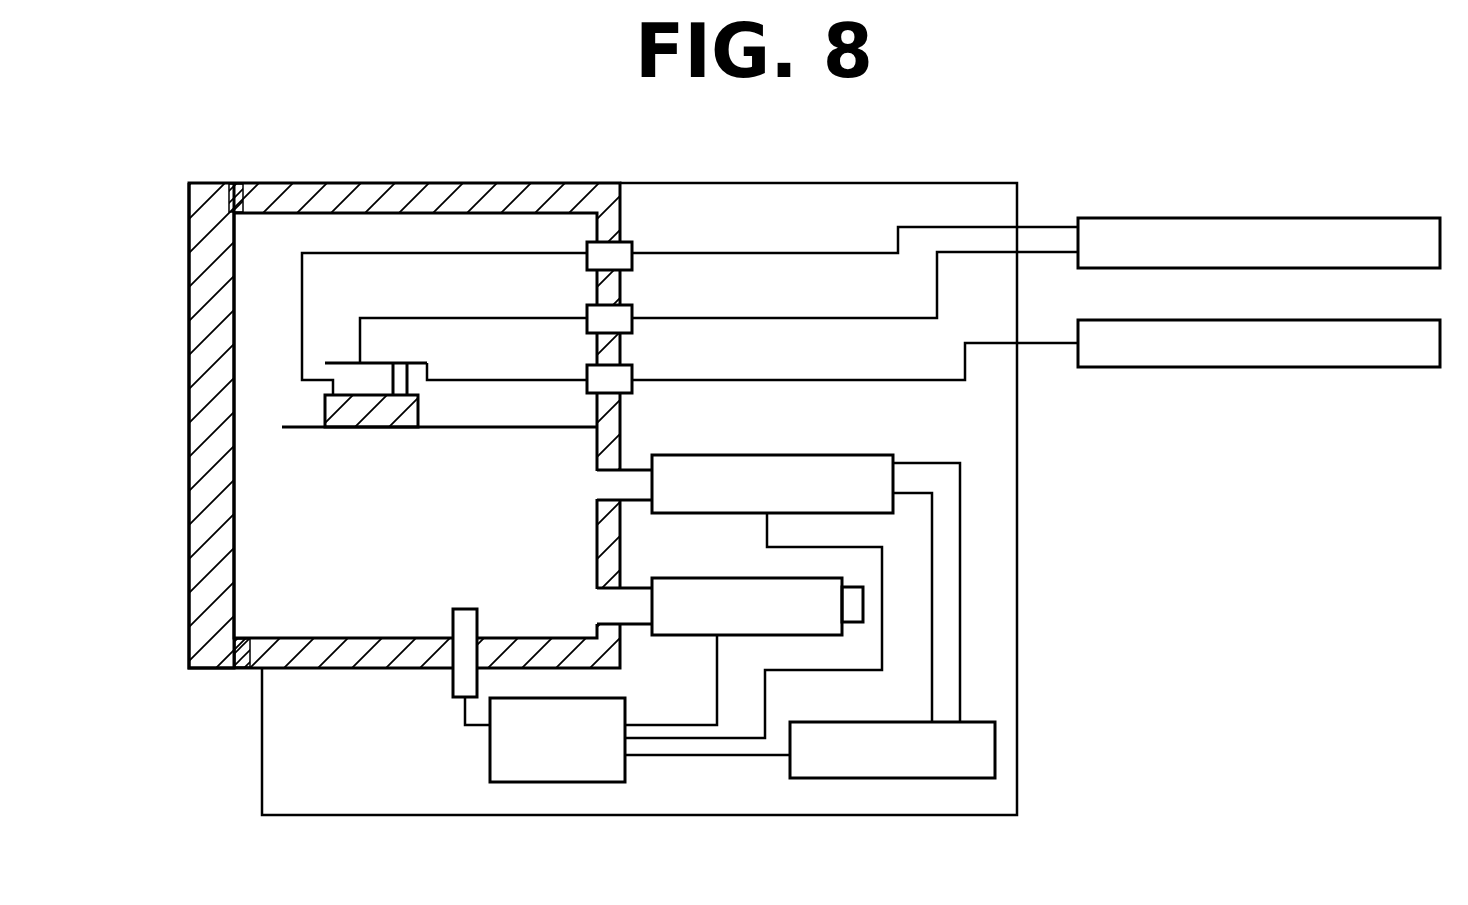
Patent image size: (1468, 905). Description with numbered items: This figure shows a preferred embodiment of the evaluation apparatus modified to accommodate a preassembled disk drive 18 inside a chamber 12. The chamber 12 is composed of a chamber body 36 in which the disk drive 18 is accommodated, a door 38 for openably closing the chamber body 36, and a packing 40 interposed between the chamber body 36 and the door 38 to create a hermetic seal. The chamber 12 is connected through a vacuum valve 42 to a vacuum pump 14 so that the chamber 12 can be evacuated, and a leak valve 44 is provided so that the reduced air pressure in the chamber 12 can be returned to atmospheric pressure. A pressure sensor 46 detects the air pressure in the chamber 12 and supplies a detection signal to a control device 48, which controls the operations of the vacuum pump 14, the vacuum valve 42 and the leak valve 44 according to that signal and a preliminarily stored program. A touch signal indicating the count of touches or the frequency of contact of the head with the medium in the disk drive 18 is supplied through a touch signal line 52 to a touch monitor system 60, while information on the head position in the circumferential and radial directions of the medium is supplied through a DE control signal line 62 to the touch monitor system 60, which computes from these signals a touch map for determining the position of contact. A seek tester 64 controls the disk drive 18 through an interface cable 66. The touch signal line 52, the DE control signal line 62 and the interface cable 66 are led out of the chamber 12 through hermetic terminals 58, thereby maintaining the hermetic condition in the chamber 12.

The chamber 12 is at (392, 385).
The vacuum pump 14 is at (995, 752).
The disk drive 18 is at (418, 413).
The chamber body 36 is at (522, 183).
The door 38 is at (204, 188).
The packing 40 is at (238, 188).
The vacuum valve 42 is at (768, 455).
The leak valve 44 is at (697, 578).
The pressure sensor 46 is at (465, 612).
The control device 48 is at (490, 754).
The touch signal line 52 is at (404, 256).
The hermetic terminals 58 is at (632, 245).
The touch monitor system 60 is at (1240, 218).
The DE control signal line 62 is at (444, 318).
The seek tester 64 is at (1245, 367).
The interface cable 66 is at (492, 380).